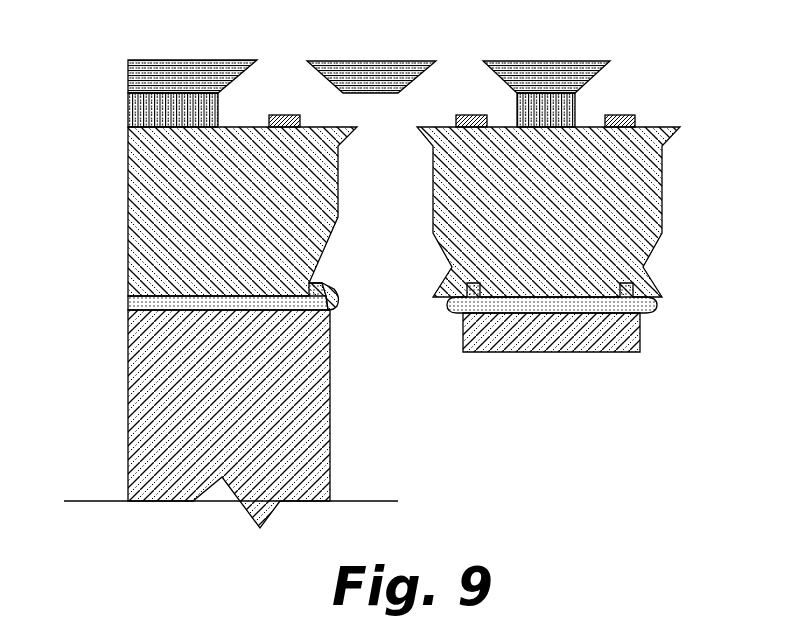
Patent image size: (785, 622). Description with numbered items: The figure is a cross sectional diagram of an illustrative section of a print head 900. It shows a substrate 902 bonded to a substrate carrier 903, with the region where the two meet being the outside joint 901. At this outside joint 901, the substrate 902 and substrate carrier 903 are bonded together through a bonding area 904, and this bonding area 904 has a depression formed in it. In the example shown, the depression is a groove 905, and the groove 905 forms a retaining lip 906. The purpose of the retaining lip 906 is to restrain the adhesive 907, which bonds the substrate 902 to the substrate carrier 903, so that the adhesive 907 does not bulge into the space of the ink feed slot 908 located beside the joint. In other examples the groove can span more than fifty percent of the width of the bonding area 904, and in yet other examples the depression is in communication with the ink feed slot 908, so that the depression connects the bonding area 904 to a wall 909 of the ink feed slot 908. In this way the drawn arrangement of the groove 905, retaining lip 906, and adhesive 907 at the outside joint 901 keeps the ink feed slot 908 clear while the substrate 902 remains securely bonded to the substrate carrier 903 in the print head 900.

The print head 900 is at (84, 70).
The outside joint 901 is at (100, 292).
The substrate 902 is at (128, 184).
The substrate carrier 903 is at (128, 389).
The bonding area 904 is at (283, 241).
The groove 905 is at (320, 277).
The retaining lip 906 is at (326, 288).
The adhesive 907 is at (334, 306).
The ink feed slot 908 is at (402, 150).
The wall 909 is at (340, 207).